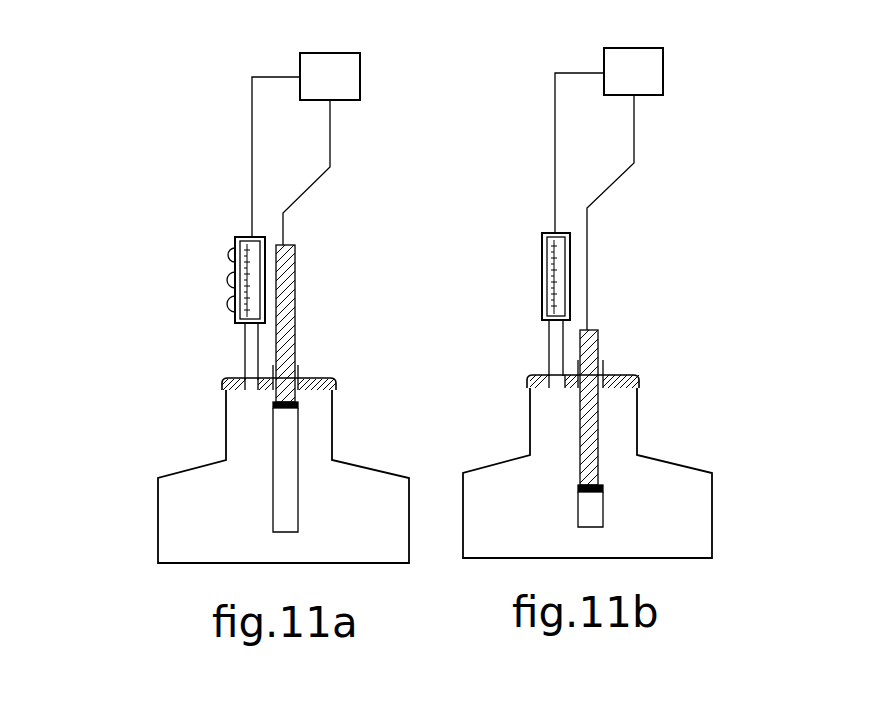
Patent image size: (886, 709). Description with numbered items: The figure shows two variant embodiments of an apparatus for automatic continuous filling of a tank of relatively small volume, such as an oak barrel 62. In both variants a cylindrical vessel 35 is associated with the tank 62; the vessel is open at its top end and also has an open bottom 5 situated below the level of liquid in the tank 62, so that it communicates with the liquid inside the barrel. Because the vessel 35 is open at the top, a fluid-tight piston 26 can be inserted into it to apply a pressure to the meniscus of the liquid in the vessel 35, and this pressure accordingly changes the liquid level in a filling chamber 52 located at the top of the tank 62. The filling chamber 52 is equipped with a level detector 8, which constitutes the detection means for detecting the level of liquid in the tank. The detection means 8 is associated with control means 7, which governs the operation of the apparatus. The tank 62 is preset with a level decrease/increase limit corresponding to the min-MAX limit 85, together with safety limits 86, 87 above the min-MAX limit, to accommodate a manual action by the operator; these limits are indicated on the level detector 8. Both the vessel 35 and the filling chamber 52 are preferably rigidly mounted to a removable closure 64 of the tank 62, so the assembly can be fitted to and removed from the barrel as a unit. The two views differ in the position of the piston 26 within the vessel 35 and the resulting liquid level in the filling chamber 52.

In FIG. 11A, the control means 7 is at (330, 53).
In FIG. 11B, the control means 7 is at (632, 48).
In FIG. 11A, the detection means 8 is at (236, 237).
In FIG. 11B, the detection means 8 is at (556, 276).
In FIG. 11A, the safety limit 86 is at (236, 252).
In FIG. 11A, the min-MAX limit 85 is at (236, 282).
In FIG. 11A, the safety limit 87 is at (236, 305).
In FIG. 11A, the filling chamber 52 is at (245, 343).
In FIG. 11B, the filling chamber 52 is at (549, 339).
In FIG. 11A, the fluid-tight piston 26 is at (298, 246).
In FIG. 11B, the fluid-tight piston 26 is at (600, 330).
In FIG. 11A, the removable closure 64 is at (318, 378).
In FIG. 11B, the removable closure 64 is at (630, 373).
In FIG. 11A, the cylindrical vessel 35 is at (298, 460).
In FIG. 11B, the cylindrical vessel 35 is at (603, 441).
In FIG. 11A, the oak barrel 62 is at (187, 468).
In FIG. 11B, the oak barrel 62 is at (677, 458).
In FIG. 11A, the open bottom 5 is at (285, 528).
In FIG. 11B, the open bottom 5 is at (588, 520).